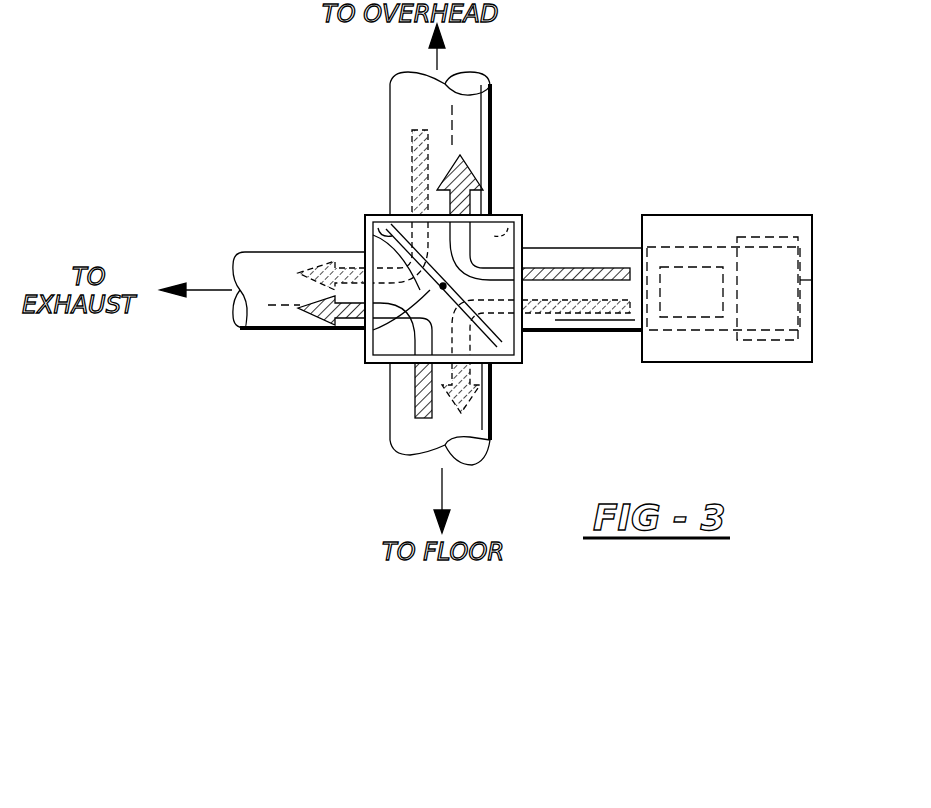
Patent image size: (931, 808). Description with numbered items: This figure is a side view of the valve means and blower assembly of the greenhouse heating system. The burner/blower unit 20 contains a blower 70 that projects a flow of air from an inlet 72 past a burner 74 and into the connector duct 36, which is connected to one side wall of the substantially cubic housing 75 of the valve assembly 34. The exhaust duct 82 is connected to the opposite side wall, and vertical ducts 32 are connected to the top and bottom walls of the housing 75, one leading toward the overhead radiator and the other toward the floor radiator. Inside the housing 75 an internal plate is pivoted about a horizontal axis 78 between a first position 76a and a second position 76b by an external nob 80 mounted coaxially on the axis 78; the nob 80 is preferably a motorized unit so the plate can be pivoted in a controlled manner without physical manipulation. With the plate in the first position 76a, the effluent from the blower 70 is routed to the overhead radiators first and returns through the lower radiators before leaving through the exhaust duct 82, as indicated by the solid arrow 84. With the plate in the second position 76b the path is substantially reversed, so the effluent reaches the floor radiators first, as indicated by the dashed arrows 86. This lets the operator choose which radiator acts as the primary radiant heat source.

The burner/blower unit 20 is at (700, 228).
The vertical ducts 32 is at (490, 125).
The valve assembly 34 is at (500, 363).
The connector duct 36 is at (626, 332).
The blower 70 is at (778, 325).
The inlet 72 is at (810, 280).
The burner 74 is at (700, 305).
The housing 75 is at (522, 350).
The first position 76a is at (375, 222).
The second position 76b is at (508, 222).
The horizontal axis 78 is at (368, 245).
The external nob 80 is at (372, 346).
The exhaust duct 82 is at (263, 258).
The solid arrow 84 is at (553, 268).
The dashed arrows 86 is at (412, 140).